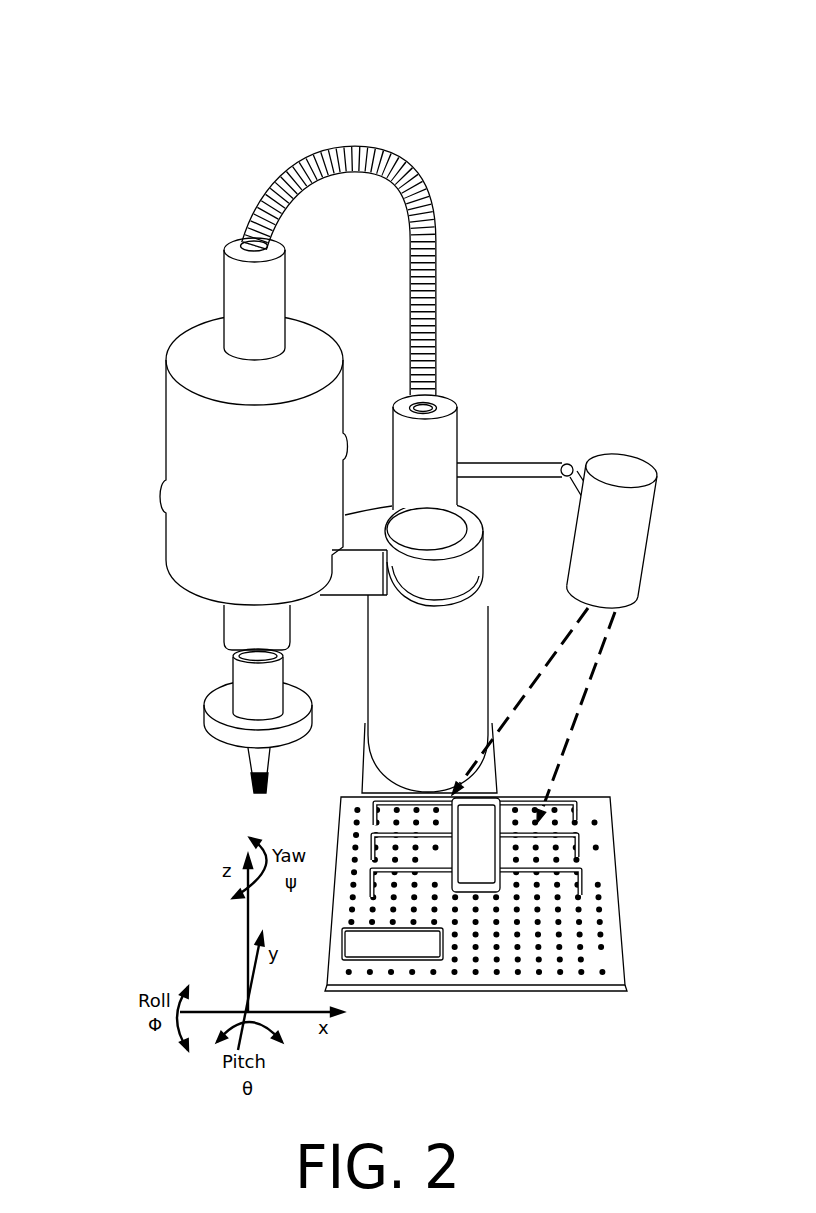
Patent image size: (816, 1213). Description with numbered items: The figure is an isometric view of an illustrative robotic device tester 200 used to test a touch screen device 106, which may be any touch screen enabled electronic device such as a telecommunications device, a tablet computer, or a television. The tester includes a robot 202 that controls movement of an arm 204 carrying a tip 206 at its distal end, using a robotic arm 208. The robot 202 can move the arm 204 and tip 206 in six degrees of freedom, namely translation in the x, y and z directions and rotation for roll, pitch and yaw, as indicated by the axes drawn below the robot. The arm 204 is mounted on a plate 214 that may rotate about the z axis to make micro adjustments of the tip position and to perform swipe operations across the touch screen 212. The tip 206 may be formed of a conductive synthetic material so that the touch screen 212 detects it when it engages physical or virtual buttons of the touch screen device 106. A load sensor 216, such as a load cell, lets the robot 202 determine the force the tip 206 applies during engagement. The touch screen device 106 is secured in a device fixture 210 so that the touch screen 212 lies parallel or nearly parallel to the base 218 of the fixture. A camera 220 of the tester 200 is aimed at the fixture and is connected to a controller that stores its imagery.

The robotic device tester 200 is at (128, 46).
The robot 202 is at (151, 377).
The arm 204 is at (250, 763).
The tip 206 is at (253, 785).
The robotic arm 208 is at (486, 500).
The device fixture 210 is at (612, 823).
The touch screen 212 is at (483, 859).
The touch screen device 106 is at (500, 887).
The plate 214 is at (207, 708).
The load sensor 216 is at (237, 662).
The base 218 is at (623, 960).
The camera 220 is at (647, 535).